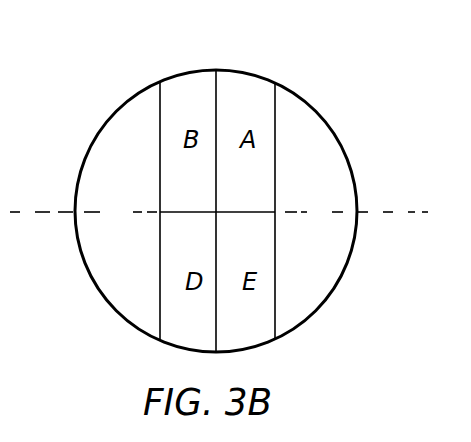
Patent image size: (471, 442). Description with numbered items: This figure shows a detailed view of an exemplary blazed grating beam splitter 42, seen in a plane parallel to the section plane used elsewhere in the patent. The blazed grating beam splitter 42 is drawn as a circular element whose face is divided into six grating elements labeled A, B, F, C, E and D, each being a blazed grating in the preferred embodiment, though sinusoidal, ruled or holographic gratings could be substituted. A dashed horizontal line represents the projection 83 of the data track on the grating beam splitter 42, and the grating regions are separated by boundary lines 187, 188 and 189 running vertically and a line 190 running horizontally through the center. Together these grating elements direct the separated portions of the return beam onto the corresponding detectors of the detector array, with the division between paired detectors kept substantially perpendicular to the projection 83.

The blazed grating beam splitter 42 is at (84, 94).
The projection of the data track 83 is at (41, 211).
The left dividing line 187 is at (158, 100).
The center dividing line 188 is at (212, 92).
The right dividing line 189 is at (277, 100).
The horizontal dividing line 190 is at (262, 214).